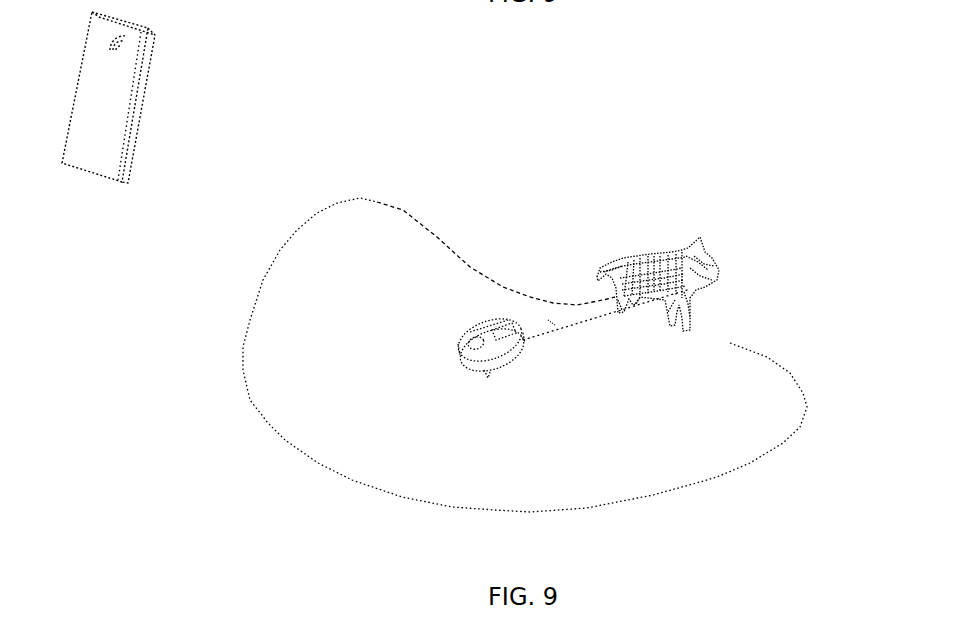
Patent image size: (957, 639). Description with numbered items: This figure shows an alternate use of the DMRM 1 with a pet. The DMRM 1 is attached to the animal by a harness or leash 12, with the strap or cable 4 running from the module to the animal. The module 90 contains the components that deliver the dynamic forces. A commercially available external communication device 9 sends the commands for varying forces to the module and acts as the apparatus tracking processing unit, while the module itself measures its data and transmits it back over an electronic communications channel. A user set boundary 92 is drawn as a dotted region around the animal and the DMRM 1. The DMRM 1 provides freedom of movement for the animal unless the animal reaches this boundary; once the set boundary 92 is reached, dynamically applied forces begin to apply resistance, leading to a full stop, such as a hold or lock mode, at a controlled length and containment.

The communication device 9 is at (103, 88).
The set boundary 92 is at (355, 192).
The DMRM 1 is at (471, 404).
The leash housing 90 is at (495, 377).
The strap or cable 4 is at (552, 325).
The harness or leash 12 is at (700, 283).